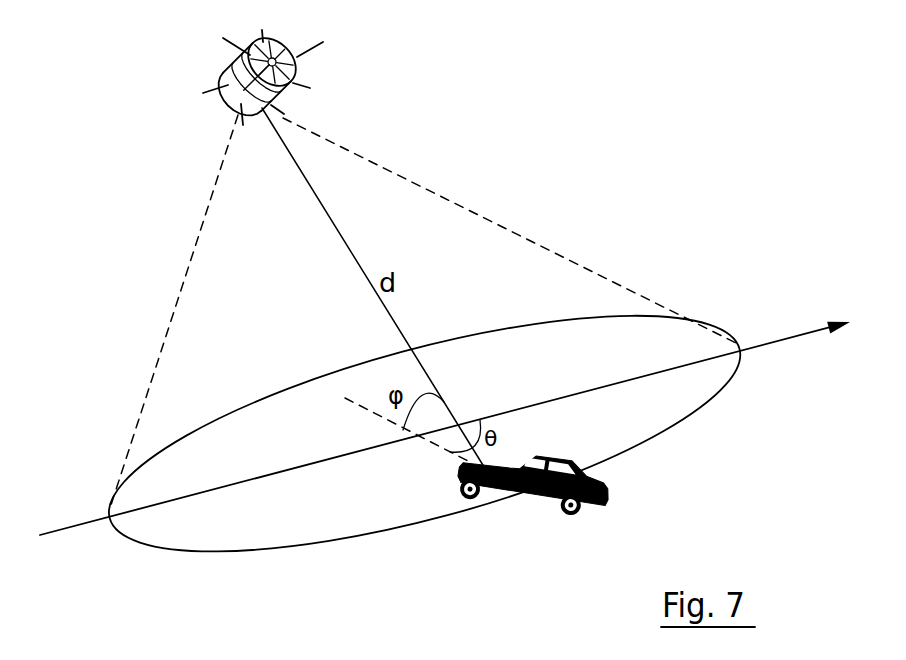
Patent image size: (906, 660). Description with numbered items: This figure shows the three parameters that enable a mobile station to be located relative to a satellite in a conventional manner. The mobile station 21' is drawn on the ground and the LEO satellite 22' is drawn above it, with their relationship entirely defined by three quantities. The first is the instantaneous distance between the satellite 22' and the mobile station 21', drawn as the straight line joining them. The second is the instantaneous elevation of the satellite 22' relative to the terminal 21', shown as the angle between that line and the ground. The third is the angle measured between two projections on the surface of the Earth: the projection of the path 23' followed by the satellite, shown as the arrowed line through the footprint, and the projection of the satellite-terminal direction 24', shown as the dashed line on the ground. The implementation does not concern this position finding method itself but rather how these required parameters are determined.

The mobile station 21' is at (534, 505).
The LEO satellite 22' is at (307, 77).
The path followed by the satellite 23' is at (442, 433).
The satellite-terminal direction 24' is at (366, 399).